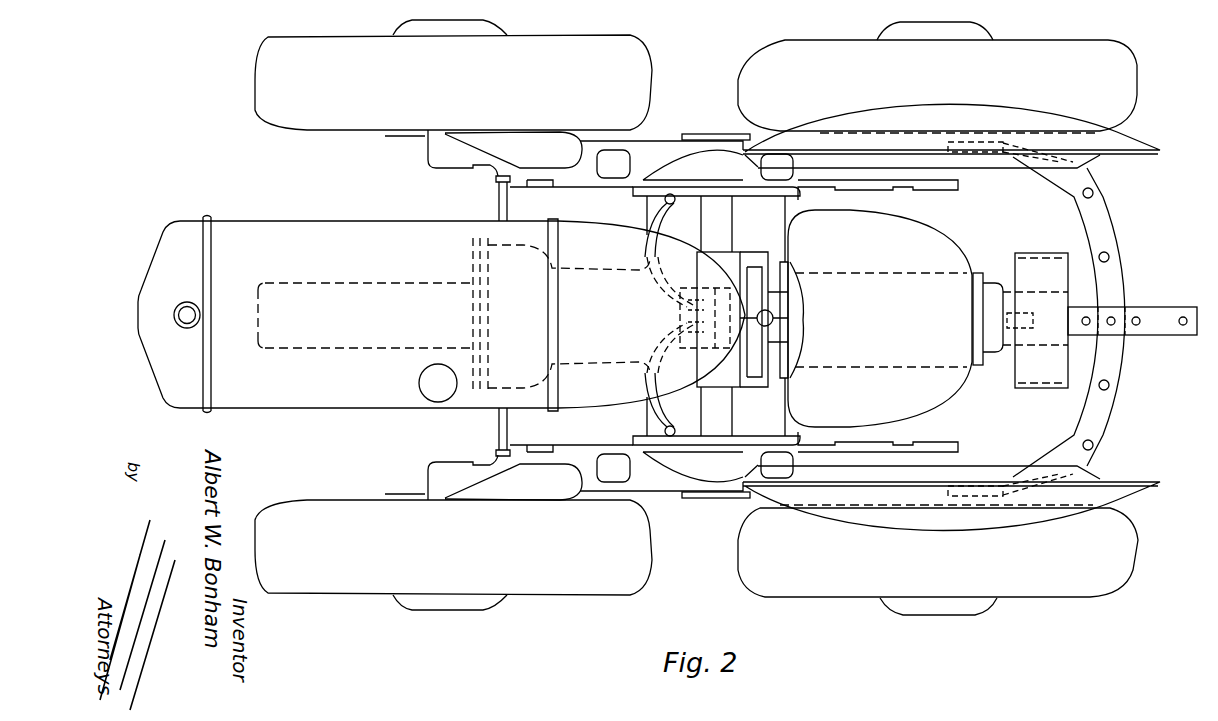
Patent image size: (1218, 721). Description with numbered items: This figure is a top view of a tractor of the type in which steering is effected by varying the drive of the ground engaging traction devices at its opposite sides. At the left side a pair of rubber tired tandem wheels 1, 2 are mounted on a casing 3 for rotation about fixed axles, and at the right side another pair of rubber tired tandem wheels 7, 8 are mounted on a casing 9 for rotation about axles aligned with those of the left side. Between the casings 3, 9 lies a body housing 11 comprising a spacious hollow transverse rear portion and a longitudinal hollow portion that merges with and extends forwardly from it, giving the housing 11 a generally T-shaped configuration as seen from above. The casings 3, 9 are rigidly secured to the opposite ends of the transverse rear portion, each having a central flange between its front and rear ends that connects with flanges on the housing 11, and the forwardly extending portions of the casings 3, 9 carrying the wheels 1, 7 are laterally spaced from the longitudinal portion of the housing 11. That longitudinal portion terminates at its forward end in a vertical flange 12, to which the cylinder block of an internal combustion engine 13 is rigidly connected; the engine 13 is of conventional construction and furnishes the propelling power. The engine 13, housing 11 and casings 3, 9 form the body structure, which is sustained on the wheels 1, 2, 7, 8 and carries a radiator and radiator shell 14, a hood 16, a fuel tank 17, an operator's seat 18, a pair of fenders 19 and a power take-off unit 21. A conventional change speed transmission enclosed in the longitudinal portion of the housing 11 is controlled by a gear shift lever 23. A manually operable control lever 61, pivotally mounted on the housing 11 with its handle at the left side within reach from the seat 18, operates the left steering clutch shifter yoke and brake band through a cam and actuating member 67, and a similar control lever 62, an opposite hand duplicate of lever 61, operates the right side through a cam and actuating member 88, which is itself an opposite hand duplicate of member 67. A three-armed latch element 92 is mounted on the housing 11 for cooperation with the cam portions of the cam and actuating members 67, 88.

The rubber tired tandem wheel 1 is at (331, 590).
The rubber tired tandem wheel 2 is at (828, 592).
The casing 3 is at (660, 492).
The rubber tired tandem wheel 7 is at (291, 126).
The rubber tired tandem wheel 8 is at (1135, 100).
The casing 9 is at (660, 150).
The body housing 11 is at (583, 367).
The vertical flange 12 is at (492, 372).
The internal combustion engine 13 is at (358, 345).
The radiator and radiator shell 14 is at (145, 350).
The hood 16 is at (338, 408).
The fuel tank 17 is at (585, 226).
The operator's seat 18 is at (945, 236).
The fenders 19 is at (1133, 150).
The power take-off unit 21 is at (985, 280).
The gear shift lever 23 is at (773, 318).
The control lever 61 is at (668, 417).
The control lever 62 is at (668, 212).
The cam and actuating member 67 is at (706, 346).
The cam and actuating member 88 is at (705, 285).
The latch element 92 is at (765, 320).